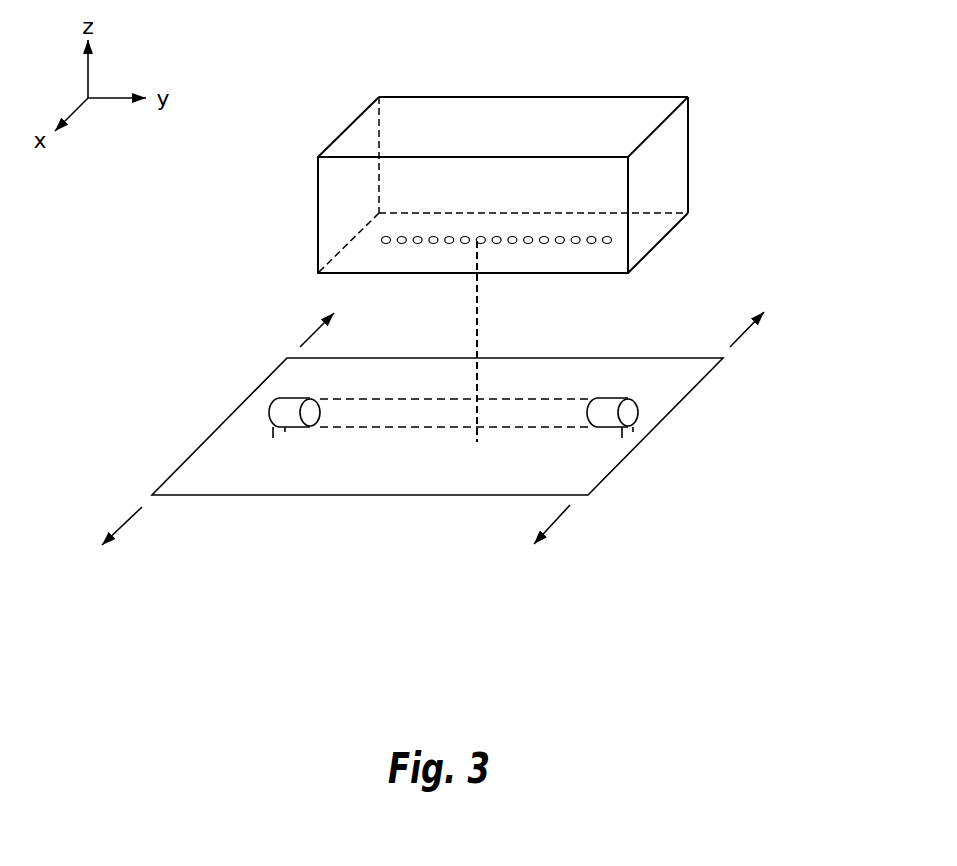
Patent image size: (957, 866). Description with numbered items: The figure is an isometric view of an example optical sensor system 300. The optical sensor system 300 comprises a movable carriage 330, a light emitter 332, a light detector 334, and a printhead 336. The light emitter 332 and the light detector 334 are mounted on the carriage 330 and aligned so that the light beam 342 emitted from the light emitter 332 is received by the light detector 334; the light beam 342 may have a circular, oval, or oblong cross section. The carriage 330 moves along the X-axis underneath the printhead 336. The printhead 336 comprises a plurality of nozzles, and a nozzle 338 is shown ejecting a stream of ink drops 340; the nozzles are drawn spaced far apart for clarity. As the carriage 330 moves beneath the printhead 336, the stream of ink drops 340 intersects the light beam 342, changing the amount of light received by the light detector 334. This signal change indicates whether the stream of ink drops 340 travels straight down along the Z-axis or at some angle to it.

The optical sensor system 300 is at (256, 314).
The movable carriage 330 is at (624, 457).
The light emitter 332 is at (278, 397).
The light detector 334 is at (627, 399).
The printhead 336 is at (689, 140).
The nozzle 338 is at (478, 242).
The stream of ink drops 340 is at (475, 313).
The light beam 342 is at (363, 428).